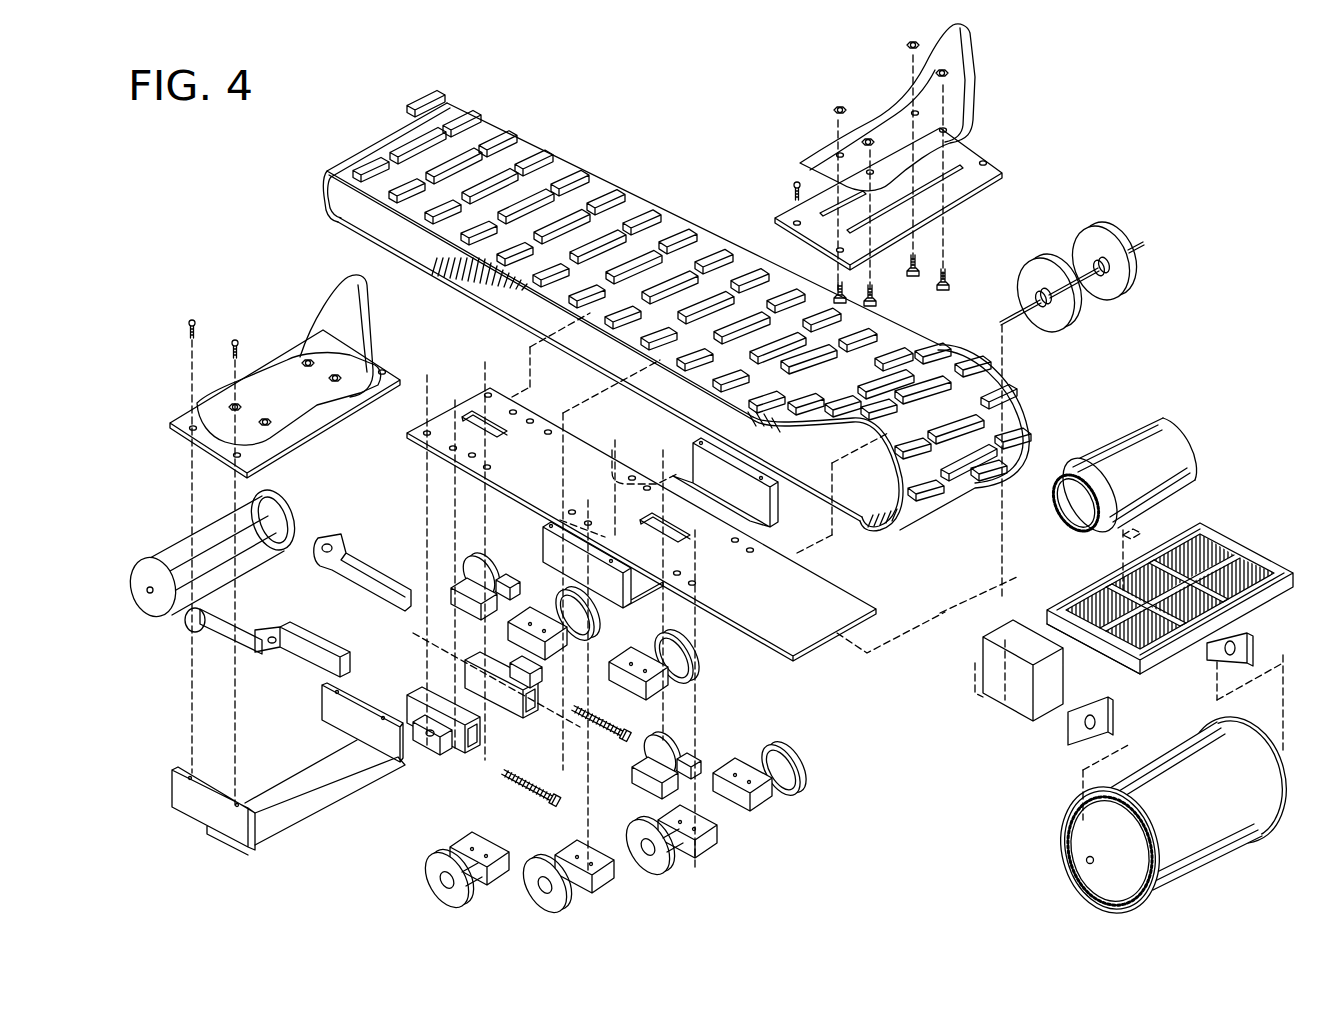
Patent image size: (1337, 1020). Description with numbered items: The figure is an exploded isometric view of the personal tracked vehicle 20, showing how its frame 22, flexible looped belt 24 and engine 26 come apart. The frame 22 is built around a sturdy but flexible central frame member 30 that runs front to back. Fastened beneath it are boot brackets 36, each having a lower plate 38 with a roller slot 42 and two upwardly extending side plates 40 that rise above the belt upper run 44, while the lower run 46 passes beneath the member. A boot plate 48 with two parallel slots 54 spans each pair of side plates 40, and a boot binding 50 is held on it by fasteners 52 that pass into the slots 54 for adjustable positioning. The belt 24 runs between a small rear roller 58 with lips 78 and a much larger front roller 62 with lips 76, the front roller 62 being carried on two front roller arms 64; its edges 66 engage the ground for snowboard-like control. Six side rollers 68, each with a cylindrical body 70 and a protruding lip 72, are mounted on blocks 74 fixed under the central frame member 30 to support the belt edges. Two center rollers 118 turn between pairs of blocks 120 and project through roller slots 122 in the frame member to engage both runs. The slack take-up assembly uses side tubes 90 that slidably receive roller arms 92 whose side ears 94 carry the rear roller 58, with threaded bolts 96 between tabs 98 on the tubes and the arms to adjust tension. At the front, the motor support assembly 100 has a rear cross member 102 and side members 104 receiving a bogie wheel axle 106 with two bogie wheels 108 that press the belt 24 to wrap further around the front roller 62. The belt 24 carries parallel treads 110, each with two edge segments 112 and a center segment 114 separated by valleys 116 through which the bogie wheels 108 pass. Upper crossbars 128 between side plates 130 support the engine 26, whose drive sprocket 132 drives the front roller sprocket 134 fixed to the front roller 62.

The personal tracked vehicle 20 is at (265, 215).
The frame 22 is at (815, 667).
The flexible looped belt 24 is at (450, 103).
The engine 26 is at (1135, 460).
The central frame member 30 is at (828, 585).
The boot bracket 36 is at (777, 498).
The lower plate 38 is at (345, 820).
The side plates 40 is at (543, 530).
The roller slot 42 is at (615, 445).
The upper run 44 is at (560, 170).
The lower run 46 is at (480, 310).
The boot plate 48 is at (325, 432).
The boot binding 50 is at (330, 310).
The fasteners 52 is at (880, 297).
The slots 54 is at (800, 188).
The rear roller 58 is at (172, 545).
The front roller 62 is at (1275, 790).
The front roller arms 64 is at (1196, 592).
The edges 66 is at (675, 222).
The side rollers 68 is at (762, 748).
The cylindrical body 70 is at (548, 855).
The lip 72 is at (530, 885).
The block 74 is at (605, 865).
The lips 76 is at (1062, 797).
The lips 78 is at (268, 495).
The side tubes 90 is at (460, 748).
The roller arms 92 is at (350, 645).
The side ears 94 is at (322, 568).
The threaded bolts 96 is at (602, 738).
The tabs 98 is at (430, 750).
The motor support assembly 100 is at (1002, 710).
The rear cross member 102 is at (1138, 665).
The side members 104 is at (978, 688).
The bogie wheel axle 106 is at (1140, 242).
The bogie wheels 108 is at (1045, 258).
The treads 110 is at (400, 168).
The edge segments 112 is at (490, 130).
The center segment 114 is at (687, 283).
The valleys 116 is at (590, 210).
The center rollers 118 is at (492, 572).
The blocks 120 is at (683, 735).
The roller slots 122 is at (655, 515).
The upper crossbars 128 is at (1212, 545).
The side plates 130 is at (1282, 562).
The drive sprocket 132 is at (1078, 532).
The front roller sprocket 134 is at (1148, 900).